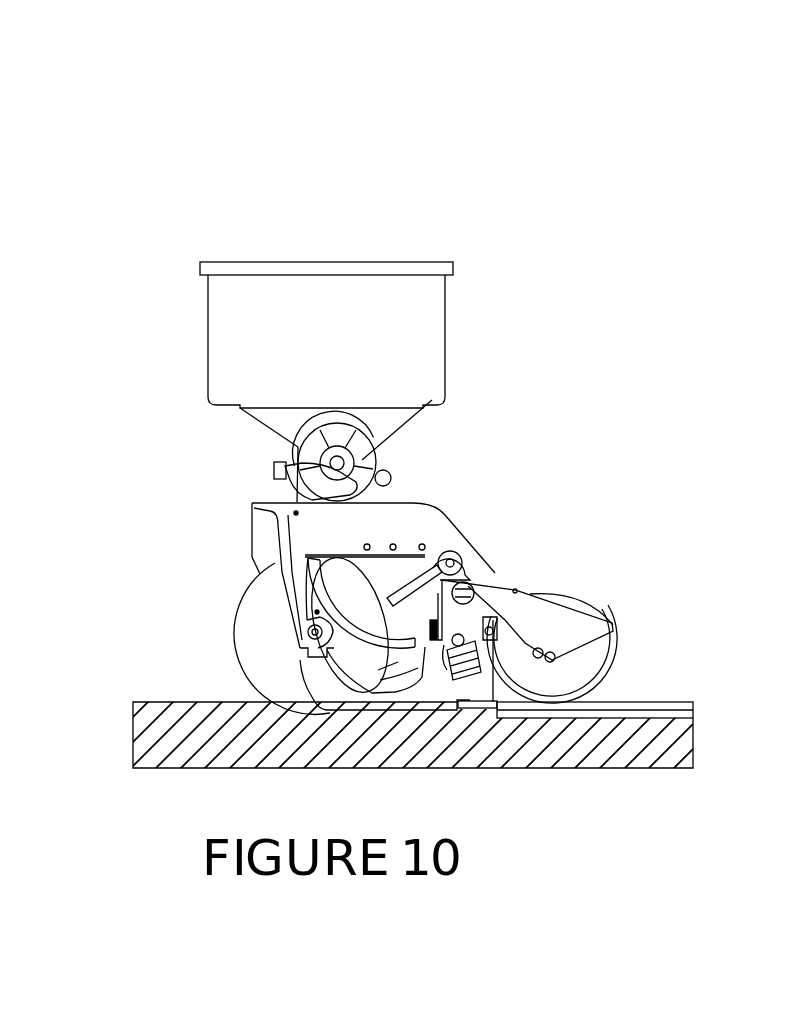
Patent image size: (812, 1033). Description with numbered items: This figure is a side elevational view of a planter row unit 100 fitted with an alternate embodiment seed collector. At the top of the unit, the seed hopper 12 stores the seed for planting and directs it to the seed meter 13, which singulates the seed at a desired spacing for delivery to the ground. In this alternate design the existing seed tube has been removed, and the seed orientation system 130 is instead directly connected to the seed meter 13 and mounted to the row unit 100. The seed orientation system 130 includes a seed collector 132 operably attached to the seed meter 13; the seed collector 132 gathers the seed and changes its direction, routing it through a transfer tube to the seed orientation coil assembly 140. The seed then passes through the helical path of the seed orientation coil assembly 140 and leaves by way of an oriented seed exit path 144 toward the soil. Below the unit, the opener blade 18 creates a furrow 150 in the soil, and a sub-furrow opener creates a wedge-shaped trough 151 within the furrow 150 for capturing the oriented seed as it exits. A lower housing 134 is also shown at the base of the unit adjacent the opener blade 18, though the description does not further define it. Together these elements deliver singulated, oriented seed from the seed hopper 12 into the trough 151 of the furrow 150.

The row unit 100 is at (494, 245).
The seed hopper 12 is at (415, 357).
The seed meter 13 is at (360, 467).
The opener blade 18 is at (235, 614).
The seed orientation system 130 is at (462, 619).
The seed collector 132 is at (328, 605).
The lower housing 134 is at (313, 684).
The seed orientation coil assembly 140 is at (497, 672).
The oriented seed exit path 144 is at (493, 695).
The furrow 150 is at (693, 704).
The trough 151 is at (693, 714).